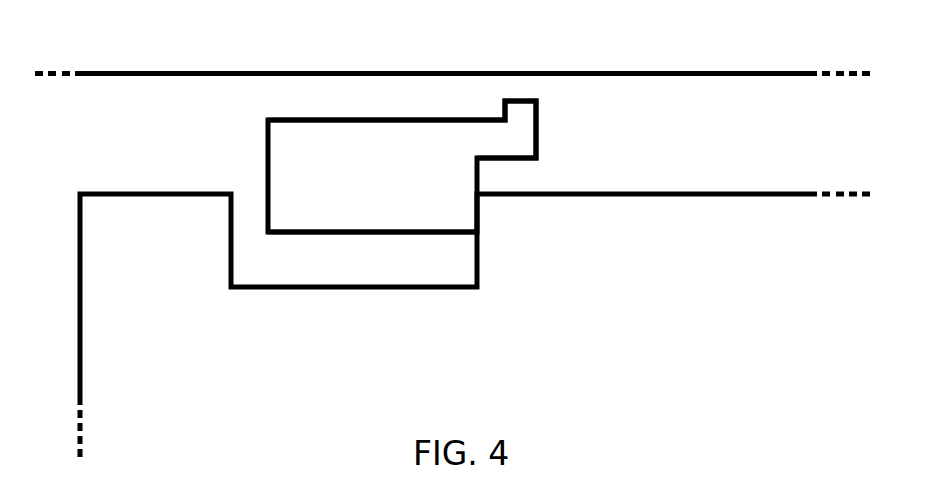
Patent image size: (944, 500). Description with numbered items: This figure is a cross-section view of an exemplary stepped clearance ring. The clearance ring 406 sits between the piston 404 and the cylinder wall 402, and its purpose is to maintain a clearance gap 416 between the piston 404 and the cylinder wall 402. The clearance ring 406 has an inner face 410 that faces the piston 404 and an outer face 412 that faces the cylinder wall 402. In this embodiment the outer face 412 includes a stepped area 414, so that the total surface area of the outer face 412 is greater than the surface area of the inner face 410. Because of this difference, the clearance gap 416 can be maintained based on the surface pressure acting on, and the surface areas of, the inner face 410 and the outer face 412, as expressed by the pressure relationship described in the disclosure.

The cylinder wall 402 is at (110, 72).
The piston 404 is at (115, 192).
The clearance ring 406 is at (265, 155).
The inner face 410 is at (331, 235).
The outer face 412 is at (332, 115).
The stepped area 414 is at (477, 113).
The clearance gap 416 is at (508, 88).